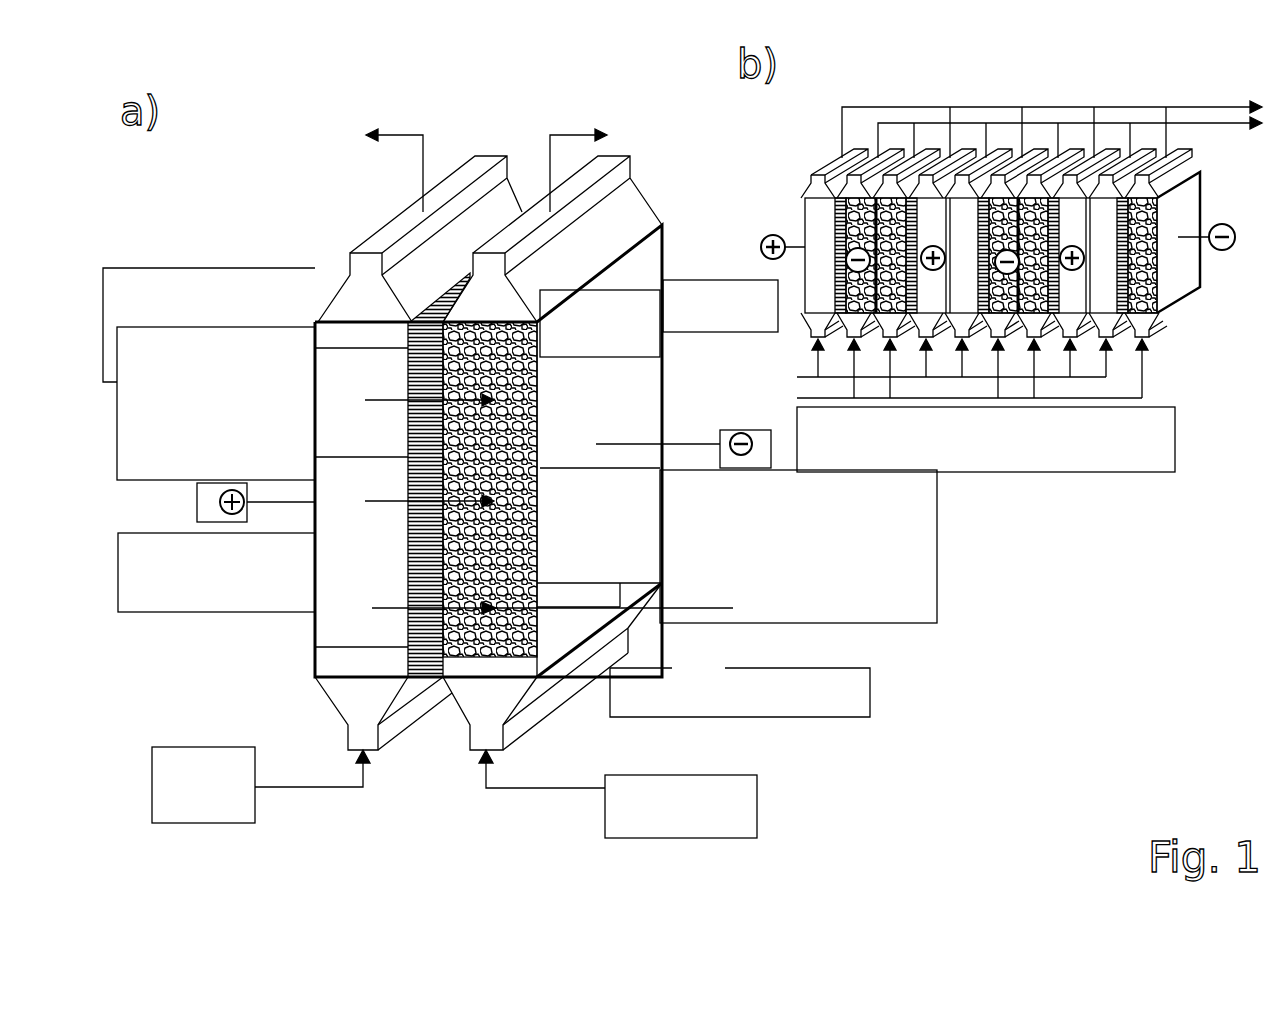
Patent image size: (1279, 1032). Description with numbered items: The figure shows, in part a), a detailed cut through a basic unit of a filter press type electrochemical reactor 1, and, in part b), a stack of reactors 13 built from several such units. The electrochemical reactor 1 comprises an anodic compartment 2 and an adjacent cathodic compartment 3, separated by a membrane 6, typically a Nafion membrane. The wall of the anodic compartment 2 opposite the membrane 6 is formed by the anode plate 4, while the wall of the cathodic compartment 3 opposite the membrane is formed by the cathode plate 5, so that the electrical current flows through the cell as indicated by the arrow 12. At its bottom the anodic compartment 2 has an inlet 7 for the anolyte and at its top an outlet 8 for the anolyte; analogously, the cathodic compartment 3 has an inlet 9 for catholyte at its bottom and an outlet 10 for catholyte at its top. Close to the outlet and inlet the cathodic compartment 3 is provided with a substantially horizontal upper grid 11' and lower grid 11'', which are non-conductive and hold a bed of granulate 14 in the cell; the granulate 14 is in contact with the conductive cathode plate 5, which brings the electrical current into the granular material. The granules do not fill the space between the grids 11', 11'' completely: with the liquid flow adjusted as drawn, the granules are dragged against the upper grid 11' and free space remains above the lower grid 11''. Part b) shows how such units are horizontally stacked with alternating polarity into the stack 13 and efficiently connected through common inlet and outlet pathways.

The electrochemical reactor 1 is at (667, 782).
The anodic compartment 2 is at (315, 327).
The cathodic compartment 3 is at (537, 561).
The anode plate 4 is at (315, 420).
The cathode plate 5 is at (632, 521).
The membrane 6 is at (408, 563).
The inlet anolyte 7 is at (913, 372).
The outlet anolyte 8 is at (897, 80).
The inlet catholyte 9 is at (1050, 473).
The outlet catholyte 10 is at (993, 72).
The upper grid 11' is at (658, 306).
The lower grid 11'' is at (703, 690).
The current direction 12 is at (330, 485).
The stack of reactors 13 is at (1207, 384).
The granulate 14 is at (575, 609).